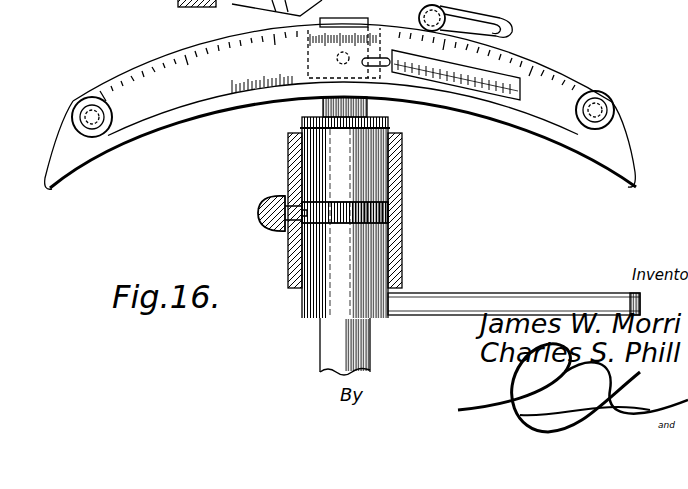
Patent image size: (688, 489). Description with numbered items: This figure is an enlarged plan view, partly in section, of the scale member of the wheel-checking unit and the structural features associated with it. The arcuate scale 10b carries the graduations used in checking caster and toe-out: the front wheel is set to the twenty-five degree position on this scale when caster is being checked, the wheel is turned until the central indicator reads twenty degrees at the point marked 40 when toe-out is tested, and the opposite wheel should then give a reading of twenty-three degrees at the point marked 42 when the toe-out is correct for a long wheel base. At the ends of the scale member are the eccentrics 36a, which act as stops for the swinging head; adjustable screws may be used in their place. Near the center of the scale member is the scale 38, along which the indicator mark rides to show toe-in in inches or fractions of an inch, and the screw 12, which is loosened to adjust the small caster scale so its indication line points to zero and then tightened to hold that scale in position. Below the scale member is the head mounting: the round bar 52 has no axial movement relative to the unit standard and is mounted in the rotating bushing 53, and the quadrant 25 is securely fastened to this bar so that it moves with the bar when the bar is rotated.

The scale 10b is at (168, 56).
The eccentrics 36a is at (639, 92).
The scale reading point 42 is at (115, 80).
The scale reading point 40 is at (548, 62).
The toe-in scale 38 is at (340, 44).
The screw 12 is at (419, 16).
The rotating bushing 53 is at (356, 158).
The quadrant 25 is at (492, 298).
The bar 52 is at (330, 348).